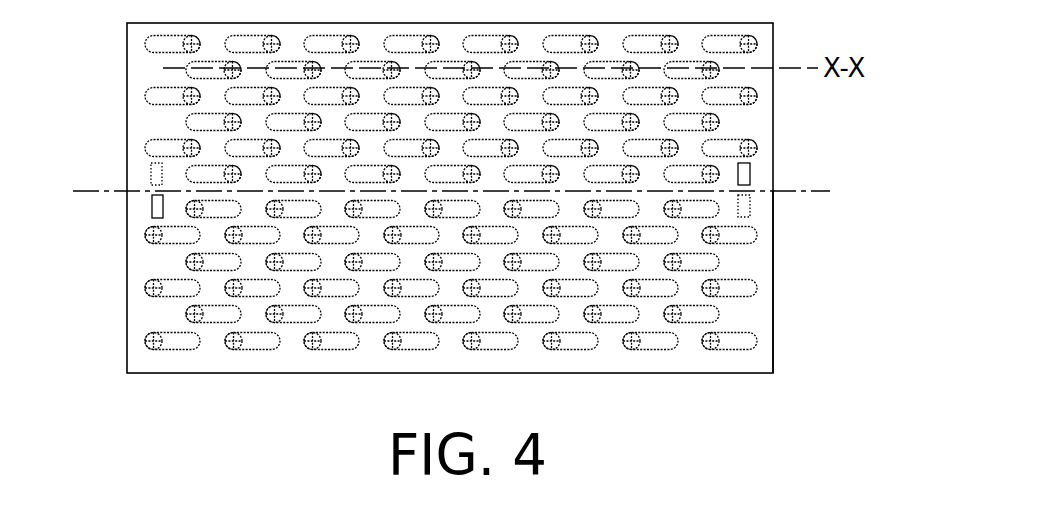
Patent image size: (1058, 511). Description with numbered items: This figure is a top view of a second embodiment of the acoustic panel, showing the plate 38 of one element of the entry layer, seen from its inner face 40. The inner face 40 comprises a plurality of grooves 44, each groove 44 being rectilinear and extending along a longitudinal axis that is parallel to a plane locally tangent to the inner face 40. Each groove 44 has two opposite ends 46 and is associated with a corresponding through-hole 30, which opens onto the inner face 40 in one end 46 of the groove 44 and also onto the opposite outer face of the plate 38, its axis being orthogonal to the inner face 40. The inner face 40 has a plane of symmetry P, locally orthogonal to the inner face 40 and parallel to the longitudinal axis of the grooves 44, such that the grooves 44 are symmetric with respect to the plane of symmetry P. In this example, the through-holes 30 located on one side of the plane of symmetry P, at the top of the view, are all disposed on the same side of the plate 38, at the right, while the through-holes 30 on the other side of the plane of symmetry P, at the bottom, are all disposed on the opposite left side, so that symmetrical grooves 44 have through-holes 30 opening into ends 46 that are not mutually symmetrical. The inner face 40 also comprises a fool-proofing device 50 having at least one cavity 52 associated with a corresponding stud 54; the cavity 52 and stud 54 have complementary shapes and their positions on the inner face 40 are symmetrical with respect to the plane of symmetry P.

The plate 38 is at (775, 123).
The inner face 40 is at (746, 313).
The groove 44 is at (739, 341).
The end 46 is at (757, 370).
The through-hole 30 is at (700, 345).
The fool-proofing device 50 is at (776, 200).
The cavity 52 is at (751, 207).
The stud 54 is at (750, 177).
The plane of symmetry P is at (816, 191).